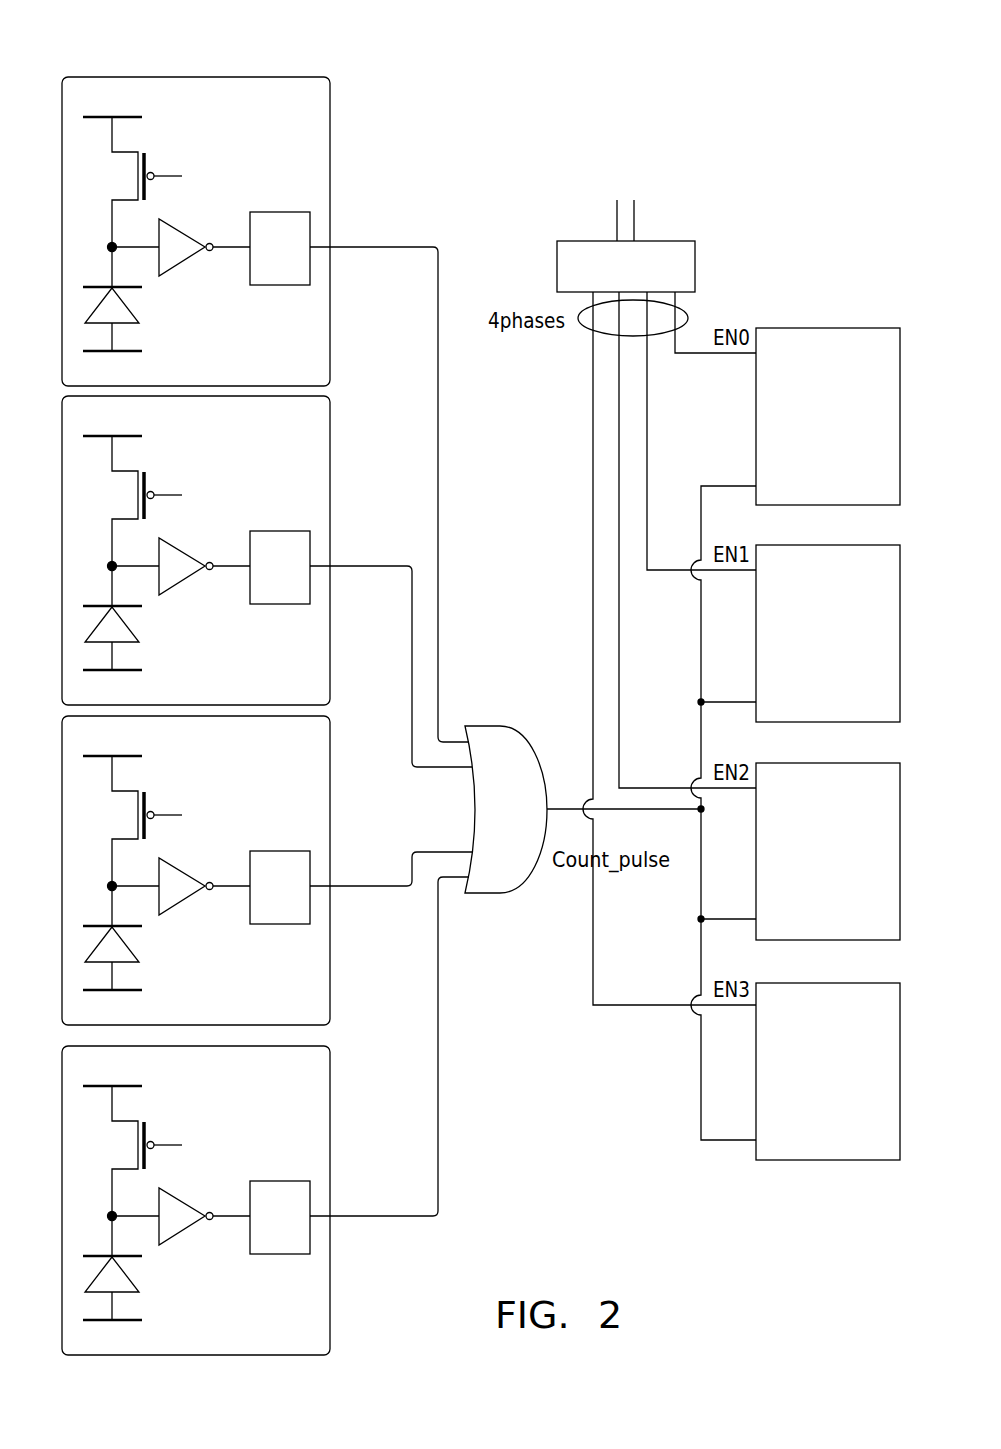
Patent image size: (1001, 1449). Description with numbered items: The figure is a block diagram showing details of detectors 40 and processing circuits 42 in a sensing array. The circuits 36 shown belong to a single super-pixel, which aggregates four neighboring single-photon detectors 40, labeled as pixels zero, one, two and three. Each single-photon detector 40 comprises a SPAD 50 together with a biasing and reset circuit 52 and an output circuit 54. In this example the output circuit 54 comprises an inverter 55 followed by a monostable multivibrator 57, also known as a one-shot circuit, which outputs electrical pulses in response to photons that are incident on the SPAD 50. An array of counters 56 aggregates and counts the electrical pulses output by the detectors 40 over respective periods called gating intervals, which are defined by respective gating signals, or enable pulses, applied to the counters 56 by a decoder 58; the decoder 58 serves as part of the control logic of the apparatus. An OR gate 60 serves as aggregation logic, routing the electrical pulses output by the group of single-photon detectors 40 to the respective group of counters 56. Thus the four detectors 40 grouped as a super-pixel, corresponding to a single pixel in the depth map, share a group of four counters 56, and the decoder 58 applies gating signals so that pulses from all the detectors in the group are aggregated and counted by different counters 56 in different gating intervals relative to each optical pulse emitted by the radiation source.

The circuits 36 is at (100, 50).
The single-photon detector 40 is at (62, 235).
The processing circuits 42 is at (900, 1174).
The SPAD 50 is at (100, 312).
The biasing and reset circuit 52 is at (180, 112).
The output circuit 54 is at (313, 287).
The inverter 55 is at (185, 236).
The counter 56 is at (900, 420).
The monostable multivibrator 57 is at (287, 212).
The decoder 58 is at (695, 258).
The OR gate 60 is at (502, 893).